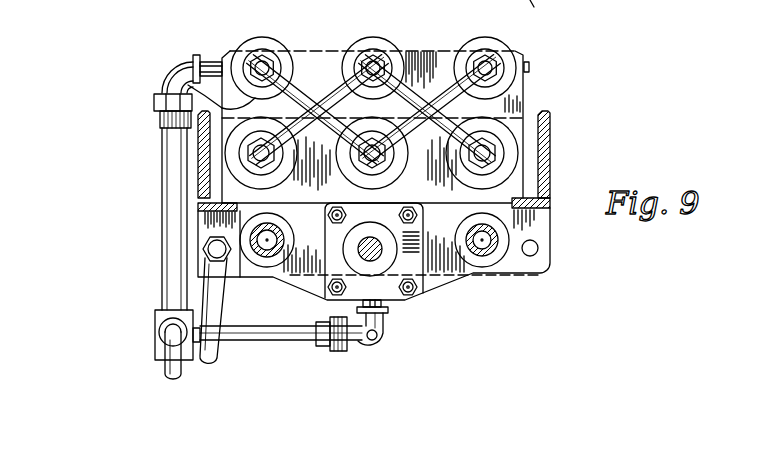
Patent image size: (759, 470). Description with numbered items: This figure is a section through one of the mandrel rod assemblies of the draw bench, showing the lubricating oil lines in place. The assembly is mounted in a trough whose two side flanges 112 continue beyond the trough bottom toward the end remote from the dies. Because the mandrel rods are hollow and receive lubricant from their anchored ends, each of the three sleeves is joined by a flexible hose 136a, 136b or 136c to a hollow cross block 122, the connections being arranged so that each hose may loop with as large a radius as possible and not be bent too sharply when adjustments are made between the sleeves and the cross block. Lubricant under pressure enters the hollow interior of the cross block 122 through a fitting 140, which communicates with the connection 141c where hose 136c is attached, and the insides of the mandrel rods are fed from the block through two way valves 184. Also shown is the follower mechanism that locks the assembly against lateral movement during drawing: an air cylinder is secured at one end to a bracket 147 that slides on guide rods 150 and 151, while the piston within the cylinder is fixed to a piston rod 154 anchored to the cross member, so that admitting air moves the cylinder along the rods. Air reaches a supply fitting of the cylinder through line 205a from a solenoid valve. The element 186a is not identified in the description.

The side flanges 112 is at (50, 0).
The fitting 140 is at (207, 62).
The flexible hose 136b is at (186, 79).
The flexible hose 136a is at (298, 82).
The flexible hose 136c is at (507, 103).
The two way valve 184 is at (373, 47).
The hollow cross block 122 is at (439, 52).
The connection 141c is at (552, 10).
The vertical pipe 186a is at (175, 170).
The guide rod 151 is at (248, 237).
The guide rod 150 is at (493, 246).
The bracket 147 is at (437, 260).
The piston rod 154 is at (378, 262).
The air line 205a is at (282, 334).